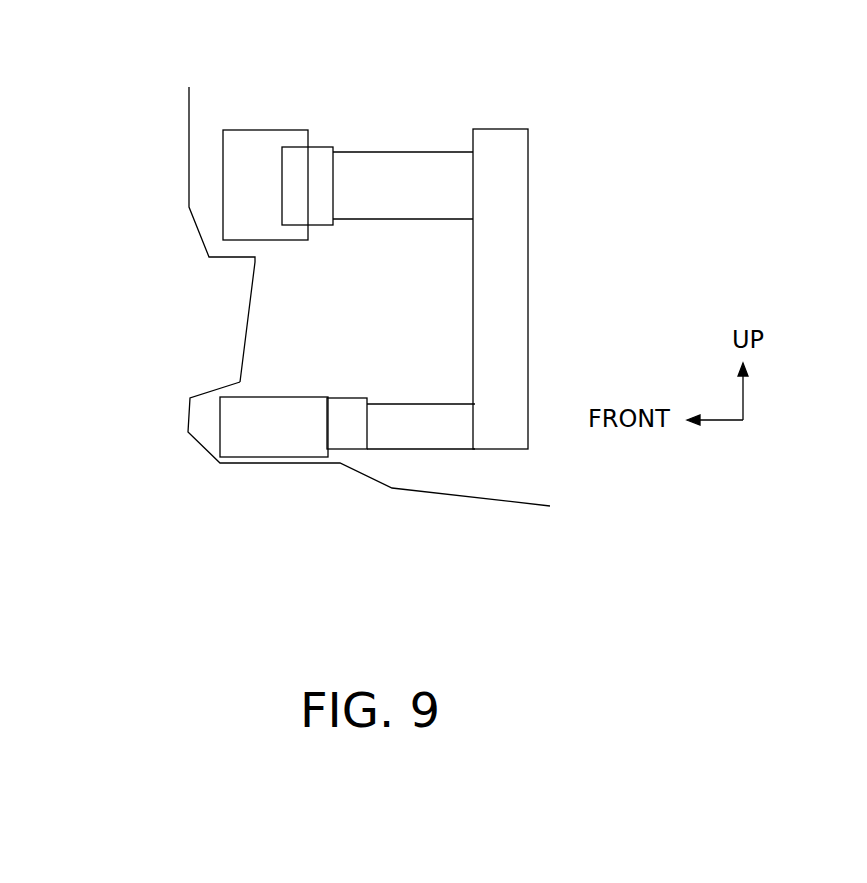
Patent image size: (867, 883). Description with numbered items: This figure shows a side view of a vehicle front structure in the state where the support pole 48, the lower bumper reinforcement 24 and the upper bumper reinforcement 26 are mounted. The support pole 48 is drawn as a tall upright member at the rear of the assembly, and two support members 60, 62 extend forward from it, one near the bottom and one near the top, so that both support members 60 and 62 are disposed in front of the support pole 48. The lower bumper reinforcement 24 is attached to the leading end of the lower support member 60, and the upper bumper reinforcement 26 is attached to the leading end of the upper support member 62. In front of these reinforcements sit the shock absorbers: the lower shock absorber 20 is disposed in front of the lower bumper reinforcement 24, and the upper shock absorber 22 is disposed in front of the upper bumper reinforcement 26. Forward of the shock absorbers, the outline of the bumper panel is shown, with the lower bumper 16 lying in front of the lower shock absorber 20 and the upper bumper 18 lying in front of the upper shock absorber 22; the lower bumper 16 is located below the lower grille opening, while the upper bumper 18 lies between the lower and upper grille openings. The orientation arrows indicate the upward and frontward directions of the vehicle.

The lower bumper 16 is at (187, 418).
The upper bumper 18 is at (188, 180).
The lower shock absorber 20 is at (277, 433).
The upper shock absorber 22 is at (248, 172).
The lower bumper reinforcement 24 is at (342, 433).
The upper bumper reinforcement 26 is at (312, 180).
The support pole 48 is at (528, 268).
The support member 60 is at (423, 433).
The support member 62 is at (410, 178).